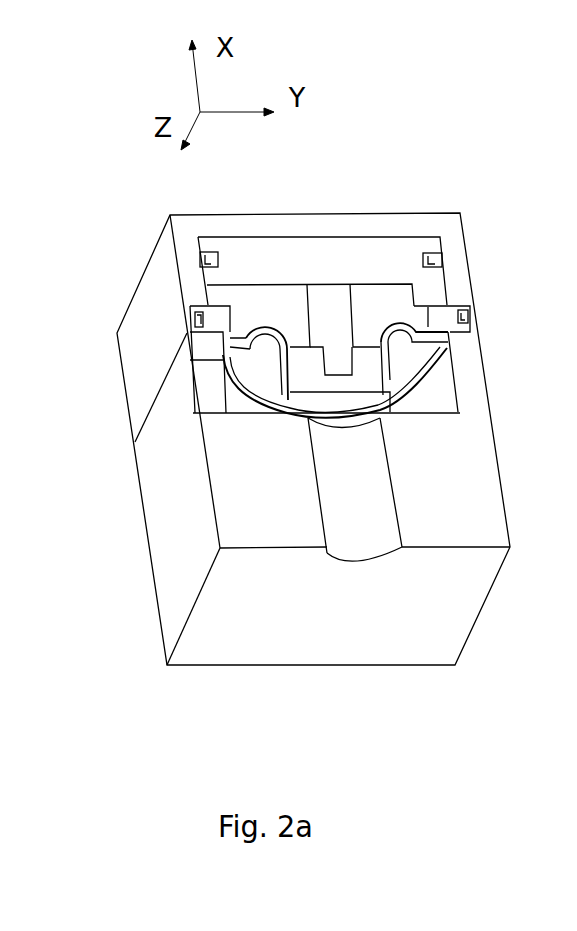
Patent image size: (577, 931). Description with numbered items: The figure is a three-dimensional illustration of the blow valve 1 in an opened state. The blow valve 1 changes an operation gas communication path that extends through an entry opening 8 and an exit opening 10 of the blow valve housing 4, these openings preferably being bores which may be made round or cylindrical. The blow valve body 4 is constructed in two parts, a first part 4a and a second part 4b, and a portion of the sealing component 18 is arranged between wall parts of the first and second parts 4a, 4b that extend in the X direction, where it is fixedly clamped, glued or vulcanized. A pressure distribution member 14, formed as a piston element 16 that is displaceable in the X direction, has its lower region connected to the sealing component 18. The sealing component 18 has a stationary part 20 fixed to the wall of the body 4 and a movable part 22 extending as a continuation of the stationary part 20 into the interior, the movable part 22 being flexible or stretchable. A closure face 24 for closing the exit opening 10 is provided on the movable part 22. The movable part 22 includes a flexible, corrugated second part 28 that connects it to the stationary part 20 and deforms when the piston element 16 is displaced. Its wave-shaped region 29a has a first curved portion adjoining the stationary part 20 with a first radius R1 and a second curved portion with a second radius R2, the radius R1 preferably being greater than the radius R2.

The blow valve 1 is at (420, 153).
The blow valve housing 4 is at (481, 669).
The first part of the blow valve body 4a is at (138, 315).
The second part of the blow valve body 4b is at (163, 580).
The entry opening 8 is at (196, 406).
The exit opening 10 is at (365, 430).
The pressure distribution member 14 is at (320, 297).
The piston element 16 is at (238, 245).
The sealing component 18 is at (445, 323).
The stationary part 20 is at (460, 305).
The movable part 22 is at (441, 379).
The closure face 24 is at (340, 402).
The second part of the movable part 28 is at (410, 322).
The wave-shaped region 29a is at (390, 322).
The first radius R1 is at (257, 325).
The second radius R2 is at (250, 328).